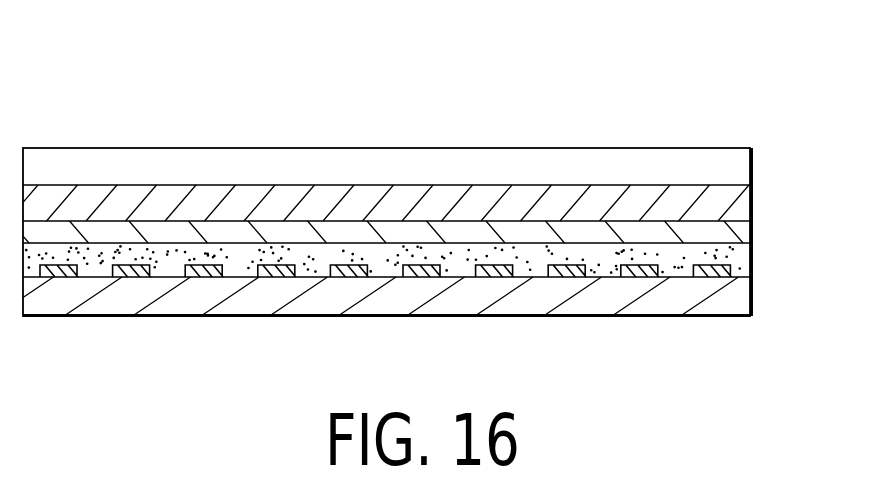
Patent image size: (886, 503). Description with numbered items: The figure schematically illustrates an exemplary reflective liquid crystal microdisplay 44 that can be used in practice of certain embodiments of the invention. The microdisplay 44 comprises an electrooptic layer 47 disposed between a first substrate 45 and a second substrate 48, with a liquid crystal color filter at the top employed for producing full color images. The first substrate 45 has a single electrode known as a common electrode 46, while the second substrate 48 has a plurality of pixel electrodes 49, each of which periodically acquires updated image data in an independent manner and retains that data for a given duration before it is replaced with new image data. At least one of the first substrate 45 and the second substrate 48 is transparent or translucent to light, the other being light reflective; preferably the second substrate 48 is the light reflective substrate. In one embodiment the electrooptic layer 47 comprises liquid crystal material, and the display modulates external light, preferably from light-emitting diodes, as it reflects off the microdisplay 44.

The microdisplay 44 is at (672, 110).
The first substrate 45 is at (752, 209).
The common electrode 46 is at (752, 231).
The electrooptic layer 47 is at (752, 258).
The second substrate 48 is at (752, 297).
The pixel electrodes 49 is at (625, 281).